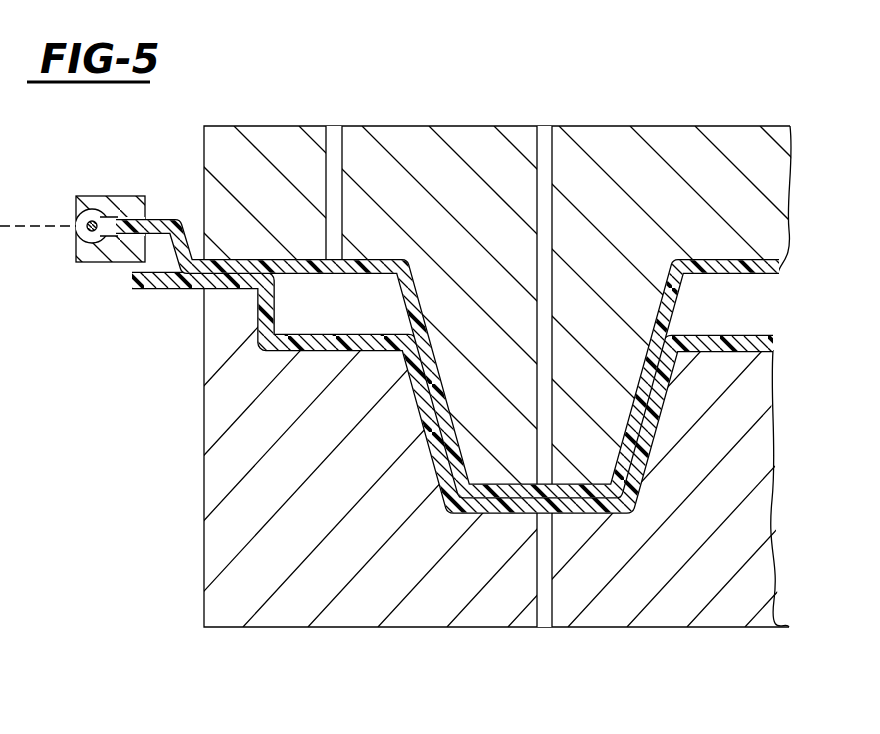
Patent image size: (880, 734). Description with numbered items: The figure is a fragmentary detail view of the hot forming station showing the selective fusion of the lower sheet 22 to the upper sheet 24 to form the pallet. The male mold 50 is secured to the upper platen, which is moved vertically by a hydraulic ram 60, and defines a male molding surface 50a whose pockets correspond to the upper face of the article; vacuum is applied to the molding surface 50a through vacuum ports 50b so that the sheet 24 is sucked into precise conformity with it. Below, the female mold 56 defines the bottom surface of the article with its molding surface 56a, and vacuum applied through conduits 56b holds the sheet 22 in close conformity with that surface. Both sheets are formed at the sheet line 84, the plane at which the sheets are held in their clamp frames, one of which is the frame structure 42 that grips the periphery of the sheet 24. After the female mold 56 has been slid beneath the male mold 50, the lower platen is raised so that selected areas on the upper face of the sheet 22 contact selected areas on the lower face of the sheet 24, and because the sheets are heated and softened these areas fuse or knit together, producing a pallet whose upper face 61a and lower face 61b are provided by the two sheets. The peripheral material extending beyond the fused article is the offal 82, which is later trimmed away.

The plastic sheet 22 is at (262, 316).
The plastic sheet 24 is at (270, 261).
The frame structure 42 is at (108, 196).
The male mold 50 is at (659, 120).
The male molding surface 50a is at (753, 271).
The vacuum ports 50b is at (545, 130).
The female mold 56 is at (212, 552).
The molding surface 56a is at (753, 342).
The conduits 56b is at (545, 628).
The hydraulic ram 60 is at (406, 388).
The upper face of the pallet 61a is at (367, 261).
The lower face of the pallet 61b is at (445, 462).
The offal 82 is at (182, 219).
The sheet line 84 is at (40, 226).